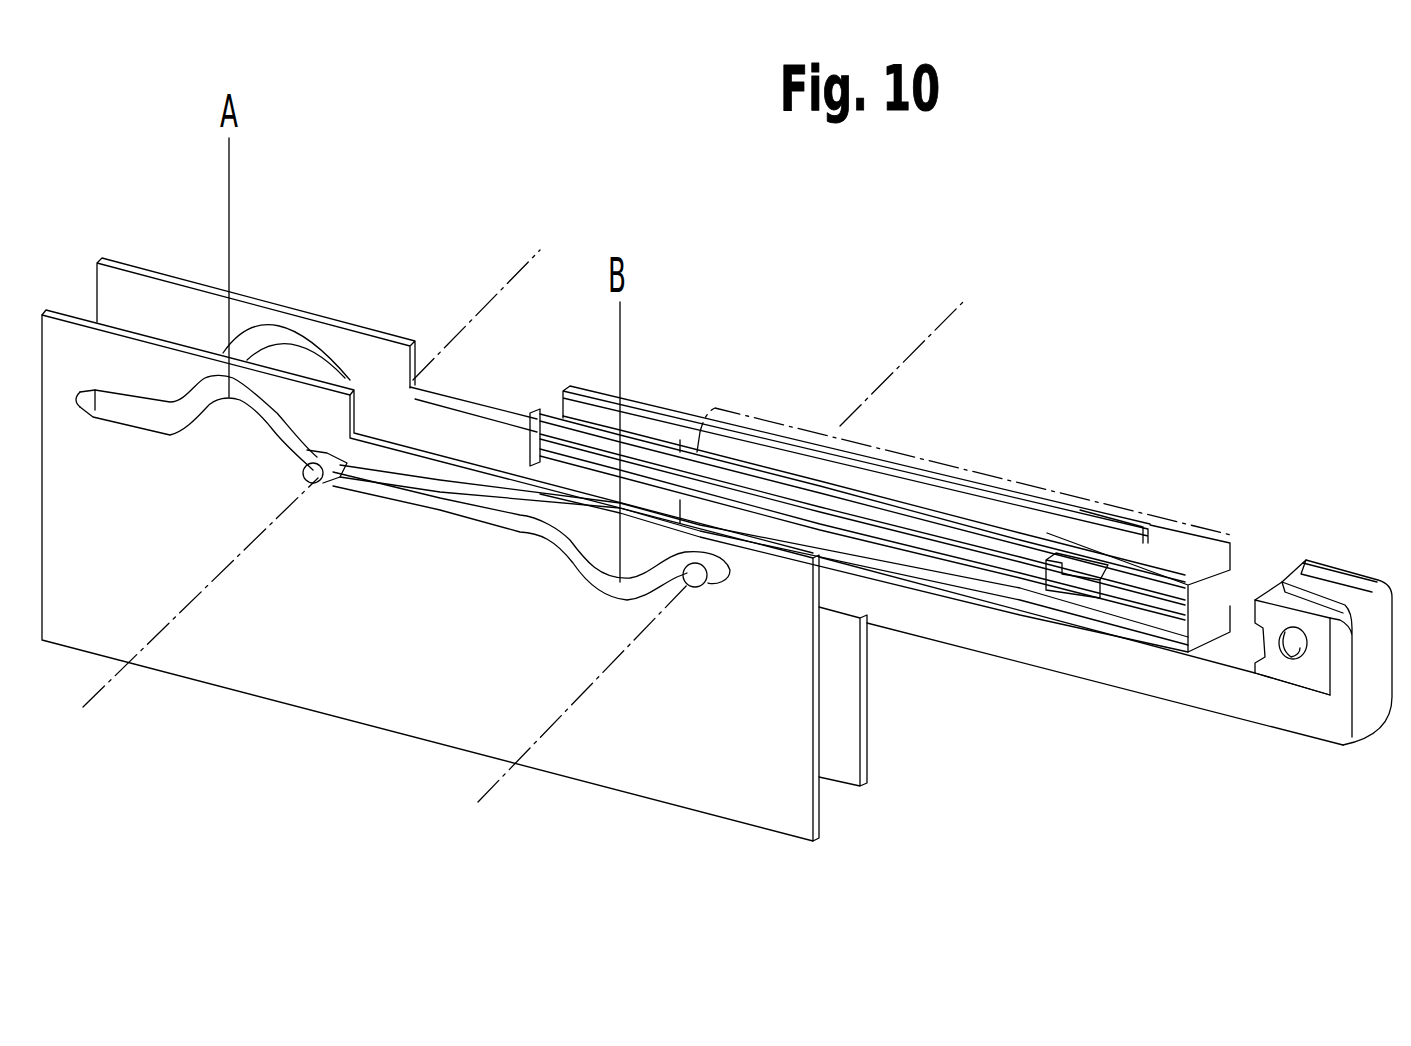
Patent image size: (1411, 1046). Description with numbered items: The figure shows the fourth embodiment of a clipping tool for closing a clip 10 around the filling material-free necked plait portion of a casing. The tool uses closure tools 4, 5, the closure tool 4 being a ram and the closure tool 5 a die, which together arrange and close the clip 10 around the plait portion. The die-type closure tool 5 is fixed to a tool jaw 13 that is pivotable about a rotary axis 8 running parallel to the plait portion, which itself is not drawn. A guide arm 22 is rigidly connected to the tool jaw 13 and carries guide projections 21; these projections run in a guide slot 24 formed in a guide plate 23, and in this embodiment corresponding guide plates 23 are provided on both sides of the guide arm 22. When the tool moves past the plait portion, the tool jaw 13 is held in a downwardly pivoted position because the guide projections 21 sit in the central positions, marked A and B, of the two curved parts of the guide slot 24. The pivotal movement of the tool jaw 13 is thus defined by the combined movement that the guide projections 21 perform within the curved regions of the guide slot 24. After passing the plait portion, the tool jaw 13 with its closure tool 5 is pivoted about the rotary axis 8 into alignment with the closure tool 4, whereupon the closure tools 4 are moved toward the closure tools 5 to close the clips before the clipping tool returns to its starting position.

The closure tool 4 is at (990, 563).
The closure tool 5 is at (1275, 584).
The rotary axis 8 is at (100, 700).
The clip 10 is at (1082, 565).
The tool jaw 13 is at (1318, 637).
The guide projection 21 is at (323, 482).
The guide arm 22 is at (1043, 647).
The guide plate 23 is at (403, 693).
The guide slot 24 is at (460, 502).